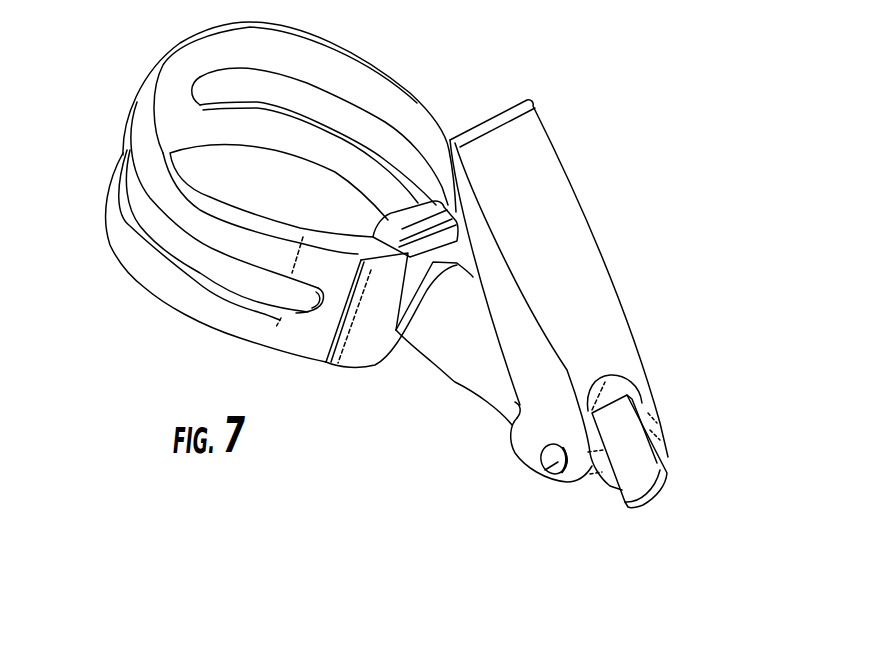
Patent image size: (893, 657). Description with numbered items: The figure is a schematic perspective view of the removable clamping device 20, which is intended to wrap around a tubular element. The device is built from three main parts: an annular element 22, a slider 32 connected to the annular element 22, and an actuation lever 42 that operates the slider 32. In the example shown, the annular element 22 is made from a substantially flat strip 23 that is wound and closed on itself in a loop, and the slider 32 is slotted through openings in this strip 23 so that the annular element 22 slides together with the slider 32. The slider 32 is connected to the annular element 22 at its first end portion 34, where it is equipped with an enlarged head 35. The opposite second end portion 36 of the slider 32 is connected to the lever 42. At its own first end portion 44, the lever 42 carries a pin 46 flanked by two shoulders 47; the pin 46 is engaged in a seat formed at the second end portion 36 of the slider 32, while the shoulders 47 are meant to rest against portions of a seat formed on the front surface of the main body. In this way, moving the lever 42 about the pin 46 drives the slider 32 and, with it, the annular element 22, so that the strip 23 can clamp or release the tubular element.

The removable clamping device 20 is at (712, 142).
The annular element 22 is at (125, 150).
The strip 23 is at (142, 262).
The slider 32 is at (445, 395).
The first end portion 34 is at (413, 347).
The enlarged head 35 is at (413, 218).
The second end portion 36 is at (650, 464).
The actuation lever 42 is at (590, 300).
The first end portion 44 is at (645, 390).
The pin 46 is at (553, 463).
The shoulders 47 is at (509, 432).